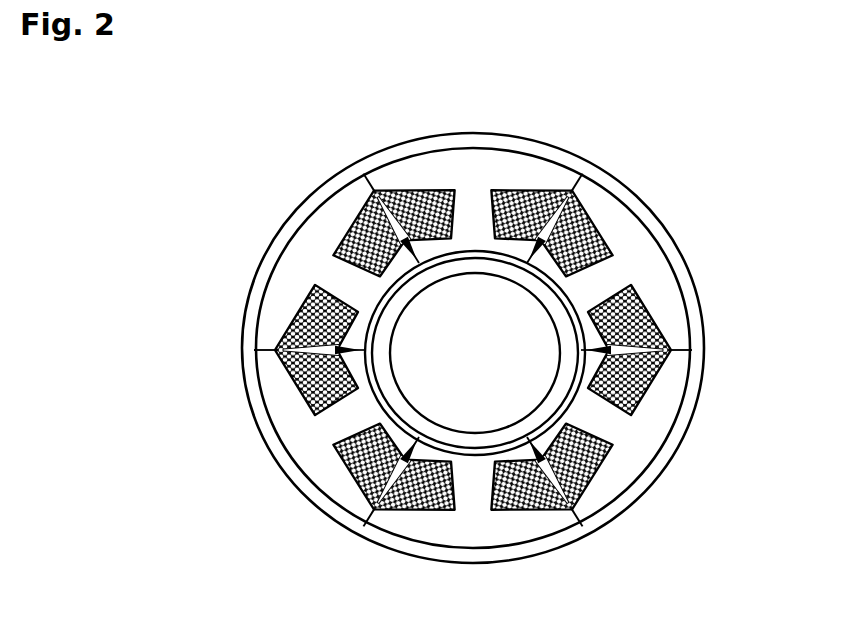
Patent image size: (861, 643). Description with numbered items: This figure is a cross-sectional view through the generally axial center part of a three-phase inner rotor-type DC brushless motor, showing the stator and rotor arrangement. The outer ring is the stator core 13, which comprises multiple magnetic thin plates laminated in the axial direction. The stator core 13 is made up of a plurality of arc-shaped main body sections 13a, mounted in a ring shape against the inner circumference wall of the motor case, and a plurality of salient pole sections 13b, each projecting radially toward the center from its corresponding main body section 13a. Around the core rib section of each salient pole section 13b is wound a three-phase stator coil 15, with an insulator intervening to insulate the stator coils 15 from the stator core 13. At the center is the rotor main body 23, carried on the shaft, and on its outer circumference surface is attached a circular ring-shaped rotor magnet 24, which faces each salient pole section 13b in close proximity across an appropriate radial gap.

The stator core 13 is at (672, 245).
The arc-shaped main body section 13a is at (643, 246).
The salient pole section 13b is at (350, 280).
The stator coil 15 is at (412, 192).
The rotor main body 23 is at (488, 363).
The rotor magnet 24 is at (610, 460).